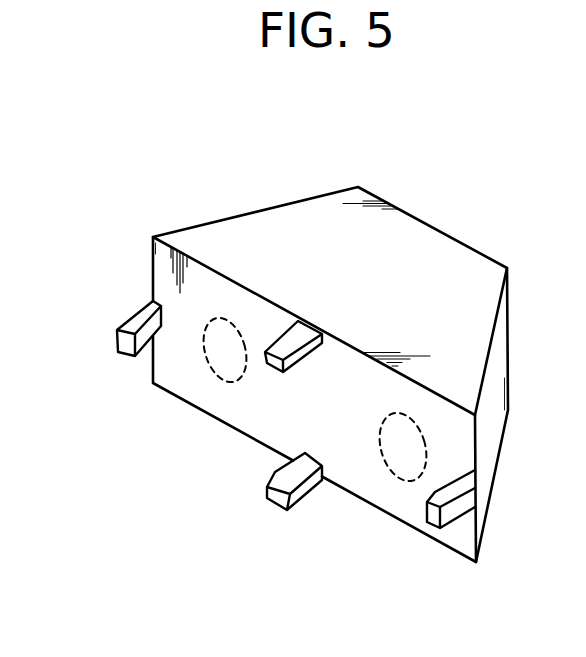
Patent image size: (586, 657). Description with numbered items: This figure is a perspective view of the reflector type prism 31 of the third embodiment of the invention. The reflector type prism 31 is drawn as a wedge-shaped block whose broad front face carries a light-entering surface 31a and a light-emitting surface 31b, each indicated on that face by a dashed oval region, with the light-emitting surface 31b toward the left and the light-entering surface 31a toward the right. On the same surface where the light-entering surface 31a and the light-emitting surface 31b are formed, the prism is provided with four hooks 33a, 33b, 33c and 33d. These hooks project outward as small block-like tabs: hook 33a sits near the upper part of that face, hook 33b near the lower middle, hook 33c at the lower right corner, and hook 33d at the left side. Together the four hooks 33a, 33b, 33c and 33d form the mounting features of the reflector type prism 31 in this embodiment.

The reflector type prism 31 is at (432, 227).
The light-entering surface 31a is at (393, 465).
The light-emitting surface 31b is at (210, 362).
The hook 33a is at (268, 366).
The hook 33b is at (272, 505).
The hook 33c is at (437, 524).
The hook 33d is at (118, 353).